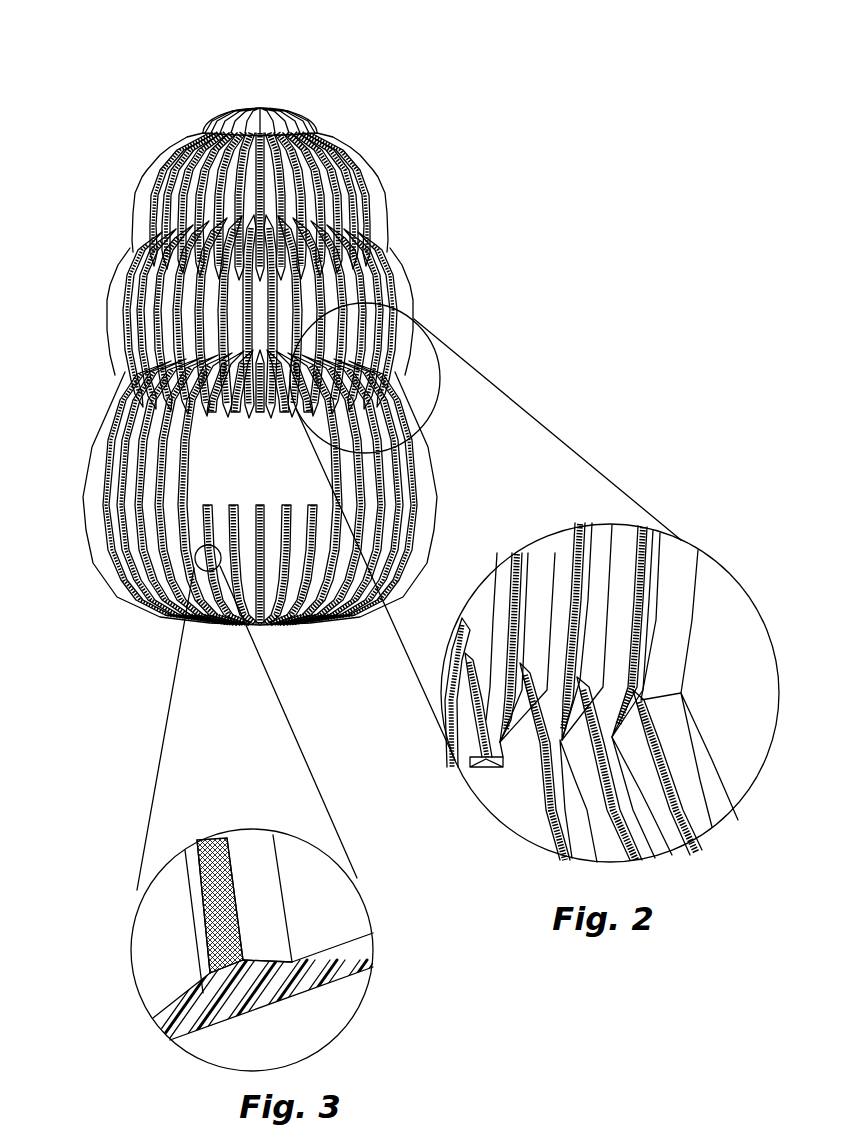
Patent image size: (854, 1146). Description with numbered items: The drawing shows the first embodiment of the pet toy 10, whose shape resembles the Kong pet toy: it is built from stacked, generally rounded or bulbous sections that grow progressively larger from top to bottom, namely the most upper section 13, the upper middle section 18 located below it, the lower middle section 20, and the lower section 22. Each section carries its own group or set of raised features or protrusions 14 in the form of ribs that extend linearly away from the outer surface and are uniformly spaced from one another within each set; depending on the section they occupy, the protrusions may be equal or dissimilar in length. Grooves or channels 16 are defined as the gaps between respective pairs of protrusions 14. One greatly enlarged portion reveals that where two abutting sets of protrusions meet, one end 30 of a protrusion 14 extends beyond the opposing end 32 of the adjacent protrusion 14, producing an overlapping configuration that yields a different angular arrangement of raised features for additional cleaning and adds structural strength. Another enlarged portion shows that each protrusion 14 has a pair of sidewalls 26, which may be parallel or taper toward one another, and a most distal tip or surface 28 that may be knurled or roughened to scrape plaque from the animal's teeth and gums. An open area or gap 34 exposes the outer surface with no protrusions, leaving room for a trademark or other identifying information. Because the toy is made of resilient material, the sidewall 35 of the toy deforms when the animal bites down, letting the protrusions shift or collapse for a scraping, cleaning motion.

In FIG. 1, the pet toy 10 is at (402, 160).
In FIG. 1, the most upper portion or section 13 is at (304, 104).
In FIG. 1, the raised features or protrusions 14 is at (223, 115).
In FIG. 2, the raised features or protrusions 14 is at (563, 538).
In FIG. 3, the raised features or protrusions 14 is at (235, 810).
In FIG. 2, the grooves or channels 16 is at (540, 557).
In FIG. 3, the grooves or channels 16 is at (243, 952).
In FIG. 1, the upper middle section 18 is at (407, 200).
In FIG. 1, the lower middle layer or section 20 is at (430, 312).
In FIG. 1, the lower layer or section 22 is at (455, 498).
In FIG. 3, the sidewalls 26 is at (248, 875).
In FIG. 3, the most distal tip or surface 28 is at (210, 848).
In FIG. 2, the one end of a protrusion 30 is at (466, 625).
In FIG. 2, the opposing end of the adjacent protrusion 32 is at (507, 794).
In FIG. 1, the open area or gap 34 is at (203, 447).
In FIG. 3, the sidewall of the animal toy 35 is at (327, 967).